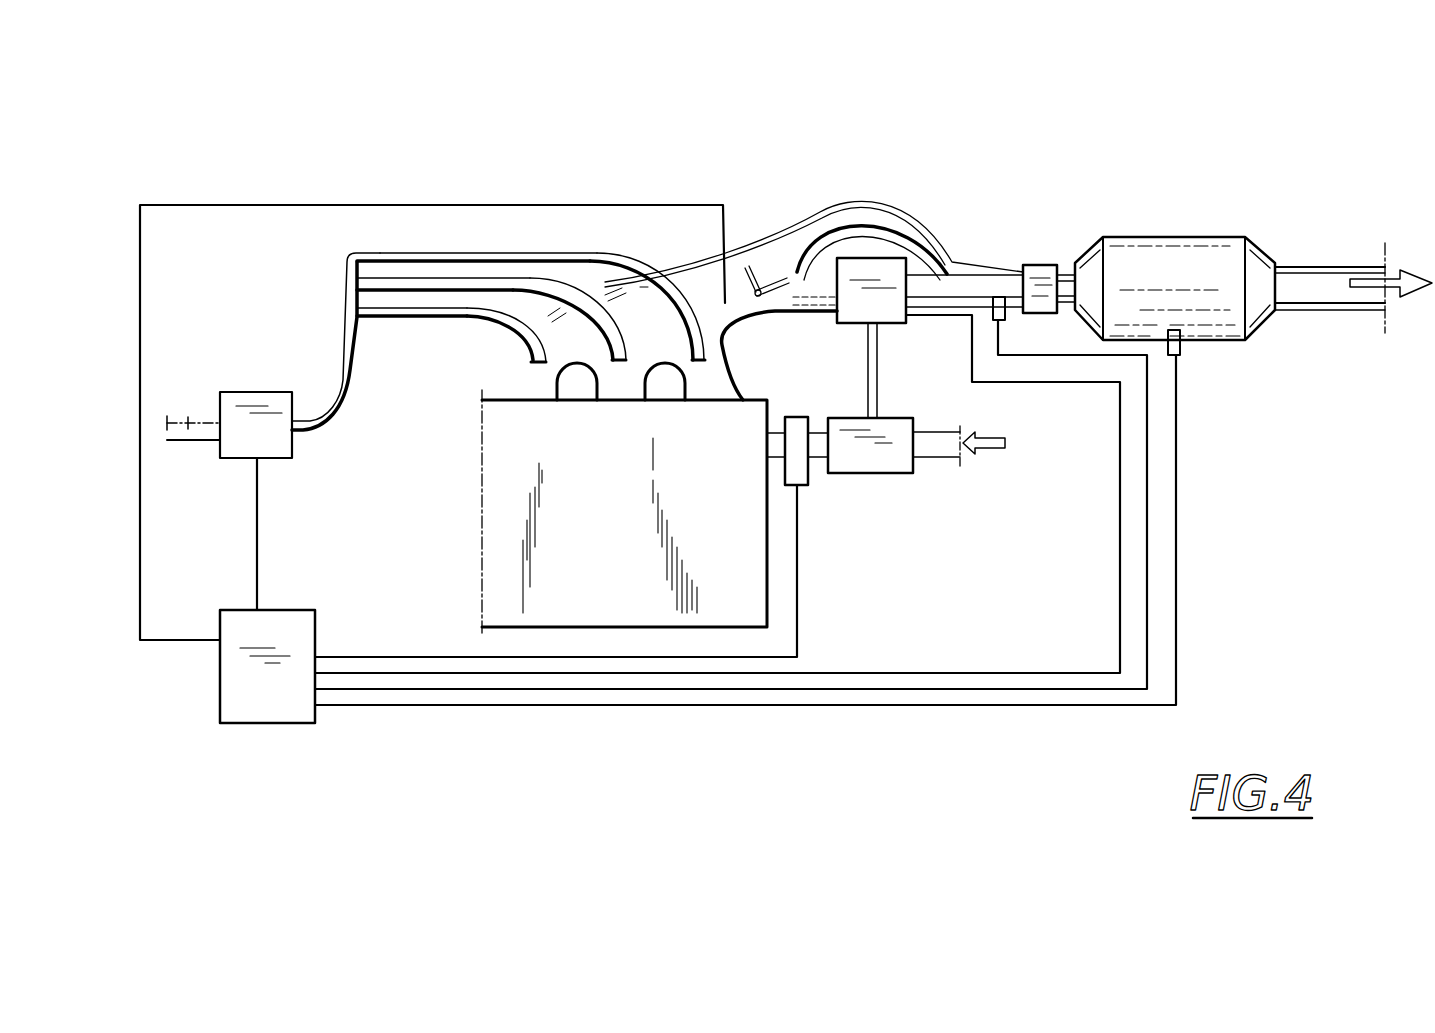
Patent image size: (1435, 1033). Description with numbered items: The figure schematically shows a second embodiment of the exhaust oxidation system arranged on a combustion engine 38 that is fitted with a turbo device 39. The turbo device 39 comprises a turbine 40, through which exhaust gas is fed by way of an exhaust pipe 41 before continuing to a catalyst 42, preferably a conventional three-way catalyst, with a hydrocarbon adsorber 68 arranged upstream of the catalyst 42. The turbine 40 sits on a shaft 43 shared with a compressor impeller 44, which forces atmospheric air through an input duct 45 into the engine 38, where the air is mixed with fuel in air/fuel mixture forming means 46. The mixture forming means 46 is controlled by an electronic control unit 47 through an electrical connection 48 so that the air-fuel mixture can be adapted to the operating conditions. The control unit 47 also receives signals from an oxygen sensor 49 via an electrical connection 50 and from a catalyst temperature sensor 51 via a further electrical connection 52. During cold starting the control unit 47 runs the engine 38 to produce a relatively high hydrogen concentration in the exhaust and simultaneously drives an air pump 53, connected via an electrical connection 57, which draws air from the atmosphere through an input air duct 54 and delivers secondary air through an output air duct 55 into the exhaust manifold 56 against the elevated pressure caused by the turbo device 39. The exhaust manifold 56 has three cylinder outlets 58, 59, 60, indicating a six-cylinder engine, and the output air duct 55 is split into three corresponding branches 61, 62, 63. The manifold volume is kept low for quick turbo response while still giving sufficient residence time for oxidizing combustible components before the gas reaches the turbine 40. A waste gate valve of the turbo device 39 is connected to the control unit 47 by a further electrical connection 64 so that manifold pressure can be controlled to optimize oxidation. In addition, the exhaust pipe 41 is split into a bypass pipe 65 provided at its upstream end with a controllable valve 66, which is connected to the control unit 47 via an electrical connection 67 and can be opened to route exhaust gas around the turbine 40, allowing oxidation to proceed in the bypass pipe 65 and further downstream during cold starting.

The combustion engine 38 is at (503, 523).
The turbo device 39 is at (912, 347).
The turbine 40 is at (866, 268).
The exhaust pipe 41 is at (810, 290).
The catalyst 42 is at (1183, 248).
The shaft 43 is at (878, 348).
The compressor impeller 44 is at (895, 468).
The input duct 45 is at (943, 452).
The air/fuel mixture forming means 46 is at (802, 478).
The electronic control unit 47 is at (275, 710).
The electrical connection 48 is at (797, 577).
The oxygen sensor 49 is at (1000, 300).
The electrical connection 50 is at (1147, 454).
The catalyst temperature sensor 51 is at (1179, 345).
The electrical connection 52 is at (1176, 423).
The air pump 53 is at (243, 396).
The input air duct 54 is at (189, 418).
The output air duct 55 is at (328, 412).
The exhaust manifold 56 is at (508, 388).
The electrical connection 57 is at (257, 548).
The cylinder outlet 58 is at (512, 372).
The cylinder outlet 59 is at (602, 375).
The cylinder outlet 60 is at (732, 383).
The branch 61 is at (489, 313).
The branch 62 is at (558, 288).
The branch 63 is at (637, 297).
The electrical connection 64 is at (1120, 473).
The bypass pipe 65 is at (786, 252).
The controllable valve 66 is at (762, 274).
The electrical connection 67 is at (350, 205).
The hydrocarbon adsorber 68 is at (1040, 278).